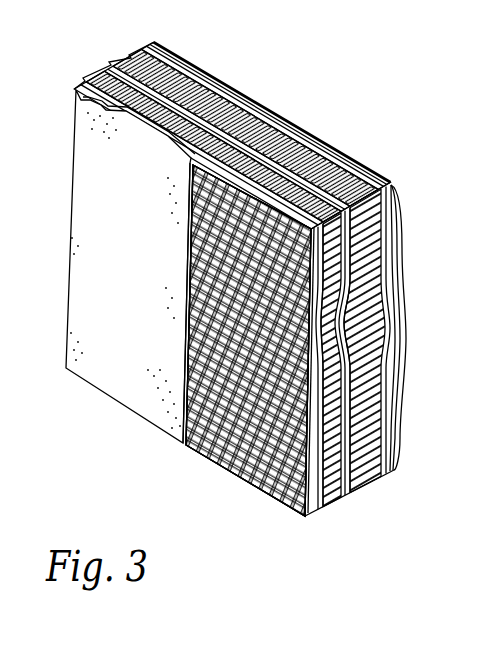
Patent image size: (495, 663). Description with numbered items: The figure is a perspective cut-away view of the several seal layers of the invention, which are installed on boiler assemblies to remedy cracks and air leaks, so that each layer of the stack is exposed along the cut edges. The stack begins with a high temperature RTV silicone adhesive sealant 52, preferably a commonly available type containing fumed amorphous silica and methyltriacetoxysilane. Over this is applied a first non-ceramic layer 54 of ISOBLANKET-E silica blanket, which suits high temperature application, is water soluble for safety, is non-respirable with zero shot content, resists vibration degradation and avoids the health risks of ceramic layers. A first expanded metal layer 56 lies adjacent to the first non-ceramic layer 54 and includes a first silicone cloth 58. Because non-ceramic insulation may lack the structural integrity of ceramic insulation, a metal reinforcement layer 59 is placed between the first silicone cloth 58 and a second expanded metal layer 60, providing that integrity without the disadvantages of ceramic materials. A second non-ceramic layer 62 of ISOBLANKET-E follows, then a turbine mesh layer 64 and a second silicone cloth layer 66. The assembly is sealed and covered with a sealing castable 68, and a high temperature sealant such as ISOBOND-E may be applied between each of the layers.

The high temperature RTV silicone adhesive sealant 52 is at (383, 333).
The first non-ceramic layer 54 is at (383, 398).
The first expanded metal layer 56 is at (353, 472).
The first silicone cloth 58 is at (345, 479).
The metal reinforcement layer 59 is at (333, 487).
The second expanded metal layer 60 is at (322, 502).
The second non-ceramic layer 62 is at (304, 508).
The turbine mesh layer 64 is at (300, 512).
The second silicone cloth layer 66 is at (217, 460).
The sealing castable 68 is at (132, 382).